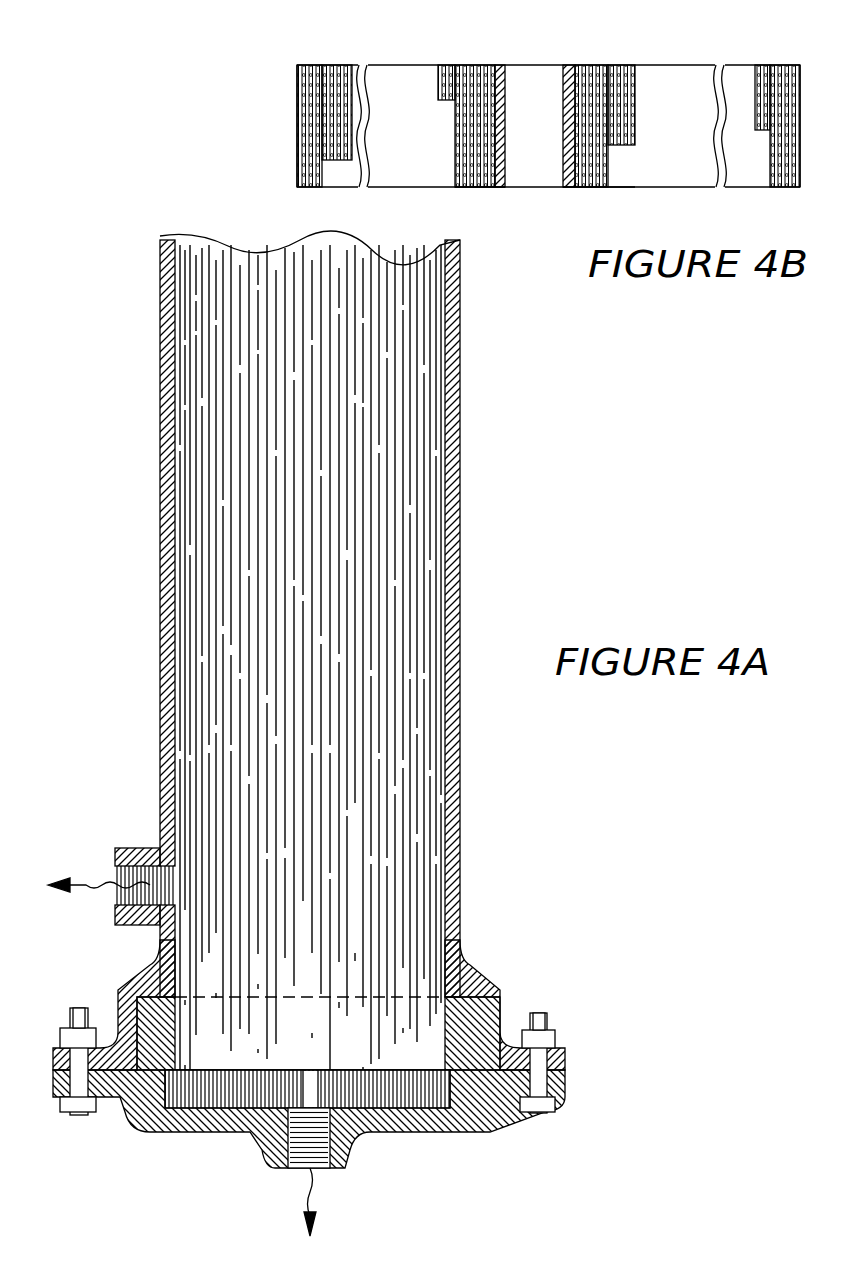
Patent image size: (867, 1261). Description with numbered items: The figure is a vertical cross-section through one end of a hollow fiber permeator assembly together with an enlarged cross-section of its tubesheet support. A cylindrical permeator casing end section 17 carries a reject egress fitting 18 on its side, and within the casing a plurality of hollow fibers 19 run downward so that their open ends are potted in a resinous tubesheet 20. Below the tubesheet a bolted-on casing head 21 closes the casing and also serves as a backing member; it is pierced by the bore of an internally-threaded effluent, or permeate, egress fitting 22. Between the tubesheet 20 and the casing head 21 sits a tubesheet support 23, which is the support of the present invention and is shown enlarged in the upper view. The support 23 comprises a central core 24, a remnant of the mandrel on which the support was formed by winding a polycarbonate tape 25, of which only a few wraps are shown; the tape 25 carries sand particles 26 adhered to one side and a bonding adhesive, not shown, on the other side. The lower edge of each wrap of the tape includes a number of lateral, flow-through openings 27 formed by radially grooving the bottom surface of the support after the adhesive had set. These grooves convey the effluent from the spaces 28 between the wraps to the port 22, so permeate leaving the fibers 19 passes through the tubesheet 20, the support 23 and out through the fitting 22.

In FIG. 4A, the permeator casing end section 17 is at (458, 440).
In FIG. 4A, the reject egress fitting 18 is at (128, 848).
In FIG. 4A, the hollow fibers 19 is at (420, 545).
In FIG. 4A, the resinous tubesheet 20 is at (455, 1010).
In FIG. 4A, the bolted-on casing head 21 is at (476, 1112).
In FIG. 4A, the effluent egress fitting 22 is at (296, 1148).
In FIG. 4B, the tubesheet support 23 is at (293, 63).
In FIG. 4A, the tubesheet support 23 is at (360, 1093).
In FIG. 4B, the central core 24 is at (505, 103).
In FIG. 4A, the central core 24 is at (307, 1090).
In FIG. 4B, the polycarbonate tape 25 is at (336, 65).
In FIG. 4B, the sand particles 26 is at (495, 65).
In FIG. 4B, the lateral flow-through openings 27 is at (470, 187).
In FIG. 4B, the spaces between the wraps 28 is at (572, 187).